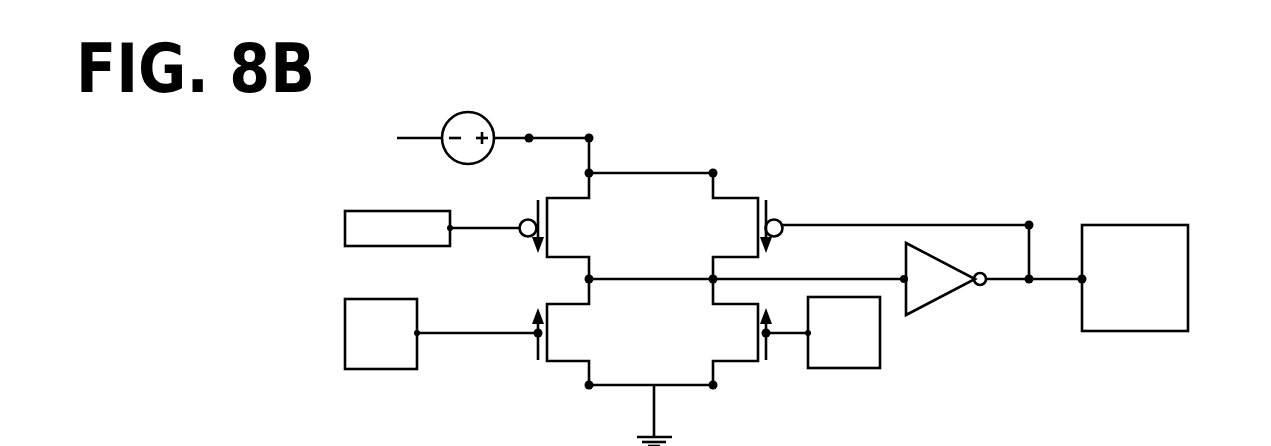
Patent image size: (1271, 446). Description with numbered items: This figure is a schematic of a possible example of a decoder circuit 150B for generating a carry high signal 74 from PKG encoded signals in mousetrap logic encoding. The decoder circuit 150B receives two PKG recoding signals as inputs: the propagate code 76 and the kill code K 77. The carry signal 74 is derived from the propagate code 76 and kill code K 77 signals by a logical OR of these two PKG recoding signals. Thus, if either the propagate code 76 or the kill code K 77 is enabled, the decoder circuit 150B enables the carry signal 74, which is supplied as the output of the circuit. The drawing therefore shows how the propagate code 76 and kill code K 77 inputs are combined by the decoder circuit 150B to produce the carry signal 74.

The decoder circuit 150B is at (765, 138).
The carry signal 74 is at (1135, 278).
The propagate code 76 is at (381, 334).
The kill code K 77 is at (844, 332).